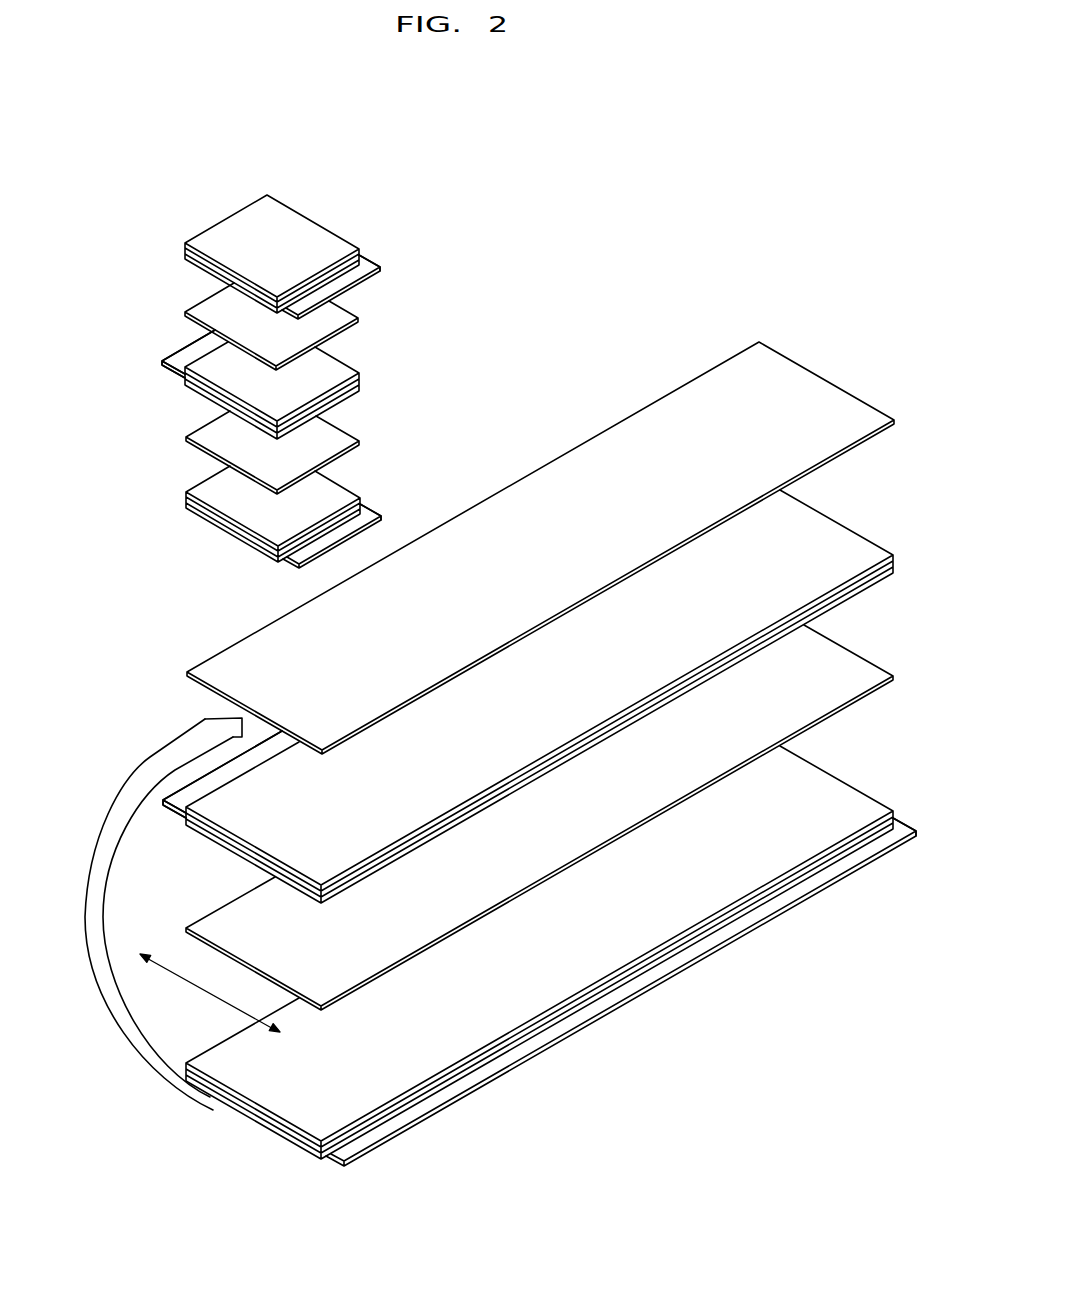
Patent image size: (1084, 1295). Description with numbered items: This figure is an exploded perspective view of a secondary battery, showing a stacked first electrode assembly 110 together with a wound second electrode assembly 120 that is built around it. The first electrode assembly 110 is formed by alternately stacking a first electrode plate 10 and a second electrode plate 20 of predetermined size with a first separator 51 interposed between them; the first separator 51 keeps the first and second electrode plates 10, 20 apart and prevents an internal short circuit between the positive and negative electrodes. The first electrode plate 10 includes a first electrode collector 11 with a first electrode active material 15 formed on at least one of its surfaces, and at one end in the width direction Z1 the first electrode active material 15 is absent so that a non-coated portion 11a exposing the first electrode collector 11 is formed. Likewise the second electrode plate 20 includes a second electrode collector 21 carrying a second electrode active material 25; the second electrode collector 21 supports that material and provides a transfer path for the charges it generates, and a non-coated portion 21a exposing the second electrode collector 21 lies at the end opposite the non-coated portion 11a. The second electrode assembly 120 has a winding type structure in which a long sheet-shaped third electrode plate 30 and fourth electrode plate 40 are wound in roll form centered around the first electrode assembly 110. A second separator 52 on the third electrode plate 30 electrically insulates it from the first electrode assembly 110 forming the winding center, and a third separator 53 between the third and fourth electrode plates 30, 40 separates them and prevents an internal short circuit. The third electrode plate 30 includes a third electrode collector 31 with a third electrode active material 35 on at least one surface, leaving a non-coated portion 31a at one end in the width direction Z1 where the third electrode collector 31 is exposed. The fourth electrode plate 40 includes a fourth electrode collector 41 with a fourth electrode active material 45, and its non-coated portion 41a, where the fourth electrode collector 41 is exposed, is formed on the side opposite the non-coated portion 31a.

The first electrode assembly 110 is at (173, 166).
The second electrode assembly 120 is at (176, 626).
The first electrode plate 10 is at (354, 360).
The first electrode collector 11 is at (182, 362).
The non-coated portion 11a is at (165, 342).
The first electrode active material 15 is at (352, 361).
The second electrode plate 20 is at (349, 228).
The second electrode collector 21 is at (382, 268).
The non-coated portion 21a is at (428, 385).
The second electrode active material 25 is at (235, 230).
The third electrode plate 30 is at (845, 514).
The third electrode collector 31 is at (208, 787).
The non-coated portion 31a is at (208, 758).
The third electrode active material 35 is at (800, 518).
The fourth electrode plate 40 is at (853, 779).
The fourth electrode collector 41 is at (778, 897).
The non-coated portion 41a is at (884, 883).
The fourth electrode active material 45 is at (807, 775).
The first separator 51 is at (208, 307).
The second separator 52 is at (808, 383).
The third separator 53 is at (832, 653).
The width direction Z1 is at (210, 993).